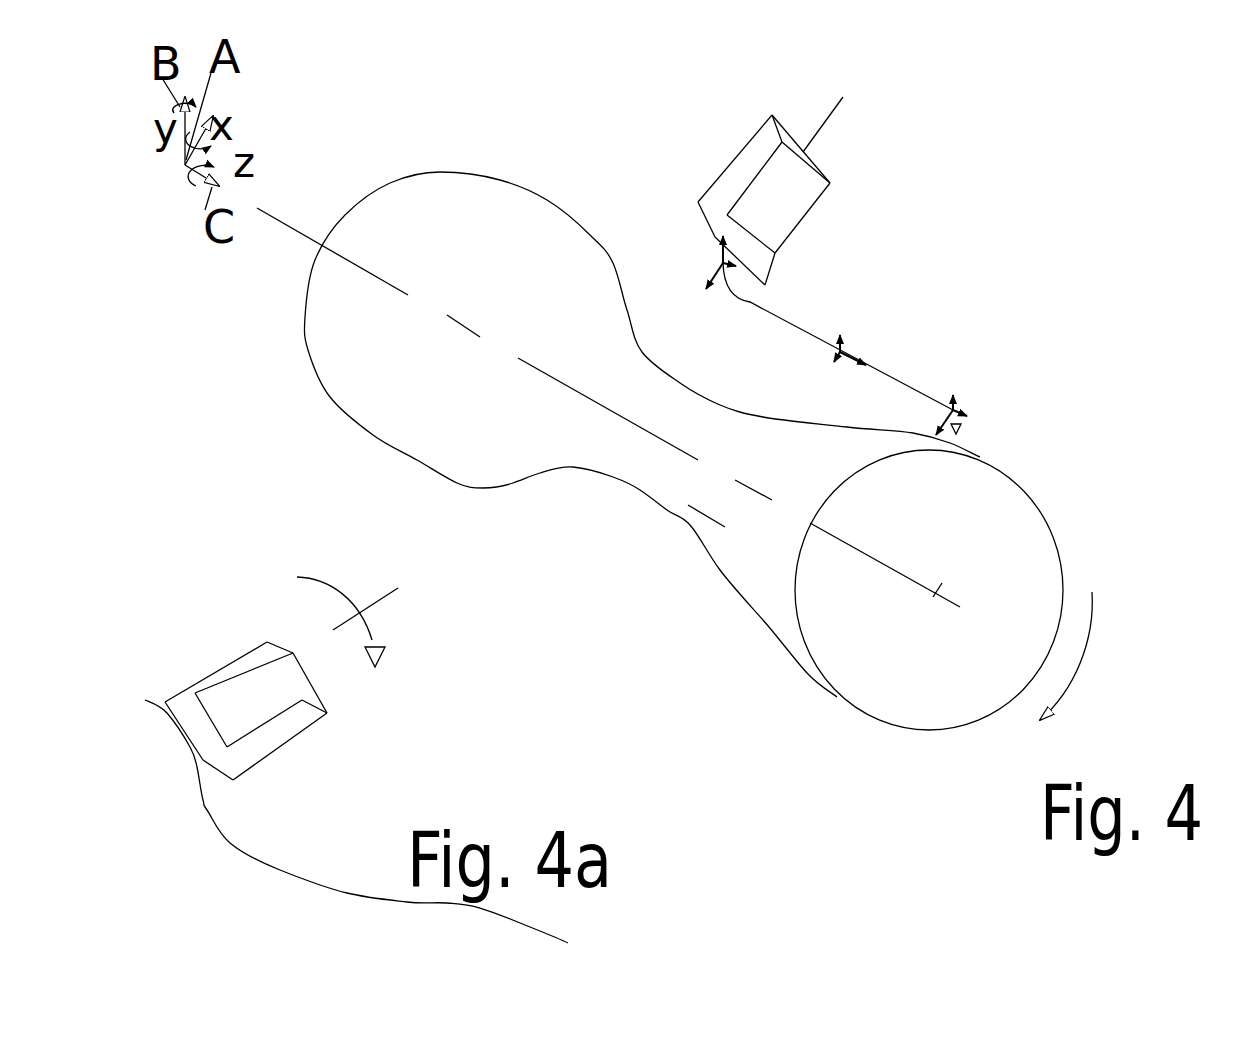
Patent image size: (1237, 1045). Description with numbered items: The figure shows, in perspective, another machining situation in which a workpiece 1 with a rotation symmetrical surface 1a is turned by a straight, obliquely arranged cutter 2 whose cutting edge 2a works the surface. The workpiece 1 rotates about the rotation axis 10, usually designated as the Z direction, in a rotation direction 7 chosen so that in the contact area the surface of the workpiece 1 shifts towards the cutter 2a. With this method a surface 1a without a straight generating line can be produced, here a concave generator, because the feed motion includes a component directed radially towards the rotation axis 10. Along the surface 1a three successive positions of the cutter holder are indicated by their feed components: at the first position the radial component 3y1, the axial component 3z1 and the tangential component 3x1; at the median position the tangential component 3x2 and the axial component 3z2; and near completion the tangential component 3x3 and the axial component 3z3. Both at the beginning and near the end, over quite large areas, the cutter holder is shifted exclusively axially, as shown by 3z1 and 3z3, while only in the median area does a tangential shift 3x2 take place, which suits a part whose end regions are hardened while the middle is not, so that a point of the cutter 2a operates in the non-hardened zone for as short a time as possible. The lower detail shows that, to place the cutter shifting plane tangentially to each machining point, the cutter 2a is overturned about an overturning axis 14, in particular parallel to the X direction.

In FIG. 4, the workpiece 1 is at (929, 584).
In FIG. 4, the rotation symmetrical surface 1a is at (642, 434).
In FIG. 4A, the rotation symmetrical surface 1a is at (190, 720).
In FIG. 4, the cutter 2 is at (731, 240).
In FIG. 4A, the cutter 2 is at (294, 653).
In FIG. 4, the cutter 2a is at (668, 157).
In FIG. 4A, the cutter 2a is at (163, 700).
In FIG. 4, the rotation direction 7 is at (1098, 613).
In FIG. 4, the rotation axis 10 is at (279, 217).
In FIG. 4A, the overturning axis 14 is at (392, 597).
In FIG. 4, the tangential component of the feed motion at the first position 3x1 is at (722, 266).
In FIG. 4, the radial component of the feed motion at the first position 3y1 is at (715, 237).
In FIG. 4, the axial component of the feed motion at the first position 3z1 is at (740, 267).
In FIG. 4, the tangential component of the feed motion at the second position 3x2 is at (837, 350).
In FIG. 4, the axial component of the feed motion at the second position 3z2 is at (855, 357).
In FIG. 4, the tangential component of the feed motion at the third position 3x3 is at (940, 427).
In FIG. 4, the axial component of the feed motion at the third position 3z3 is at (957, 410).